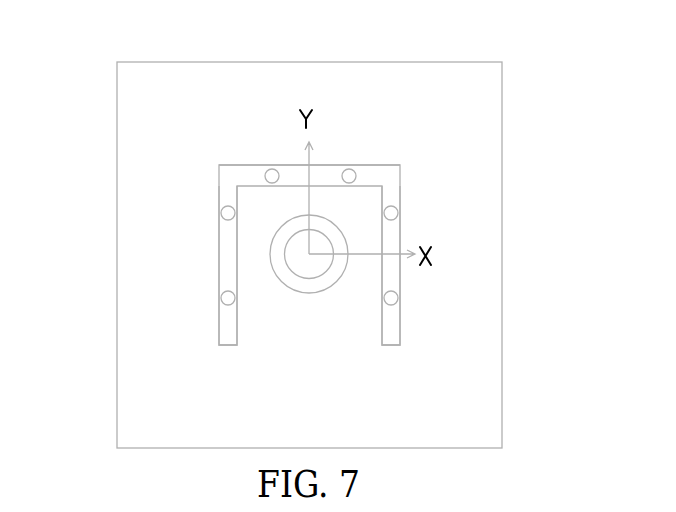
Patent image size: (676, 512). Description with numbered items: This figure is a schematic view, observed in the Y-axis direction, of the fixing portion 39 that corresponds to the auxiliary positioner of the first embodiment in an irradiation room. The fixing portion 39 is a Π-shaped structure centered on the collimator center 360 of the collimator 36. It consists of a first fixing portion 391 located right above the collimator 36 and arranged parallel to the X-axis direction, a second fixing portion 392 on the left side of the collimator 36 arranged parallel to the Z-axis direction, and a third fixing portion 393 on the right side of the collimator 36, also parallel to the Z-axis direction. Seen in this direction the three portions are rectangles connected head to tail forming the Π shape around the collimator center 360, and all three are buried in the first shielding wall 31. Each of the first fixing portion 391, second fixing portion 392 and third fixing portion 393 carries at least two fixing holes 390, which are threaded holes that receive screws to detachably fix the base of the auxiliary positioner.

The first shielding wall 31 is at (275, 229).
The fixing portion 39 is at (308, 180).
The first fixing portion 391 is at (356, 99).
The second fixing portion 392 is at (133, 265).
The fixing holes 390 is at (132, 188).
The third fixing portion 393 is at (485, 265).
The collimator 36 is at (415, 202).
The collimator center 360 is at (191, 305).